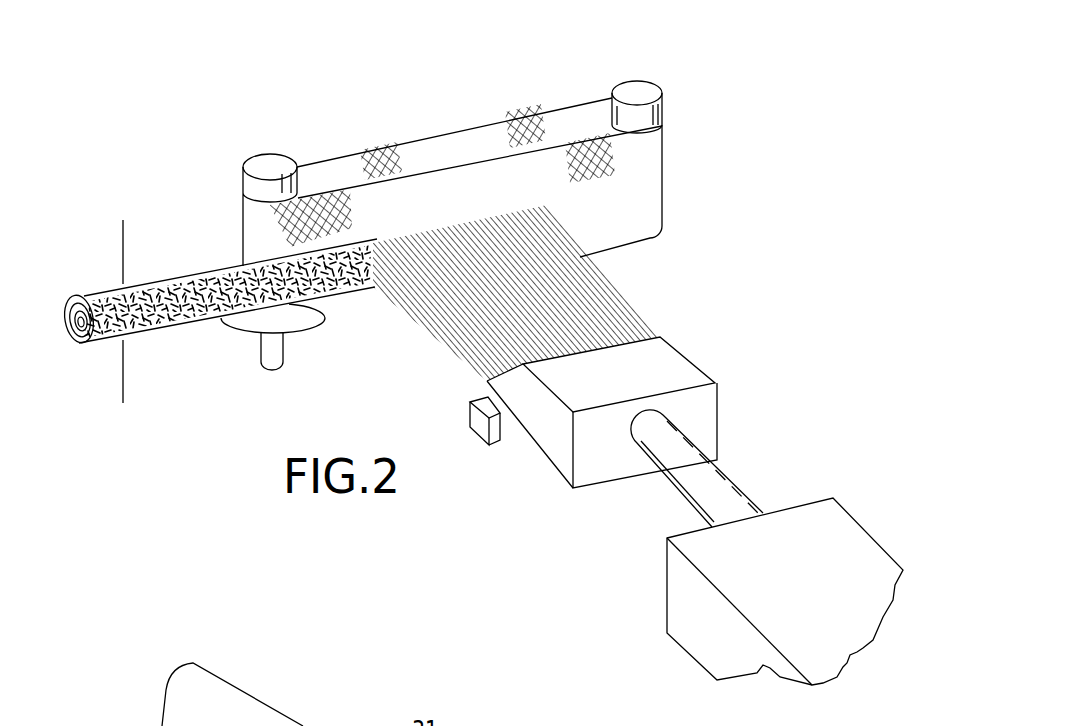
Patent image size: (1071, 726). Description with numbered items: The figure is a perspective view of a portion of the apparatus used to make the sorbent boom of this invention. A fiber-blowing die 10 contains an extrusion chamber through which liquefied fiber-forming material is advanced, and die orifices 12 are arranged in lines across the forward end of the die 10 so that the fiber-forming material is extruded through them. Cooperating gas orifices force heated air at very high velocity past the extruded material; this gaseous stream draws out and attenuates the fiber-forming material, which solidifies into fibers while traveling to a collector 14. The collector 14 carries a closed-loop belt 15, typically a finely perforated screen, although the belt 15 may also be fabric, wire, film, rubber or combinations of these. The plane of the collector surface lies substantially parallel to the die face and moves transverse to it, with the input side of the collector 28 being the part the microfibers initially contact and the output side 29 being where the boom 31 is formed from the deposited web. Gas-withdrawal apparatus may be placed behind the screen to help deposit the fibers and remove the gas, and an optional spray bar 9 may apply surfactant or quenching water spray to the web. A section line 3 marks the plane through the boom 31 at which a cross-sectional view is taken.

The section line 3- 3 is at (100, 397).
The nozzle 9 is at (473, 427).
The guide block 10 is at (540, 440).
The fiber web 12 is at (485, 378).
The wrapping station 14 is at (645, 55).
The netting 15 is at (455, 128).
The feed plate 28 is at (655, 153).
The roller 29 is at (250, 213).
The sorbent sliver 31 is at (353, 293).